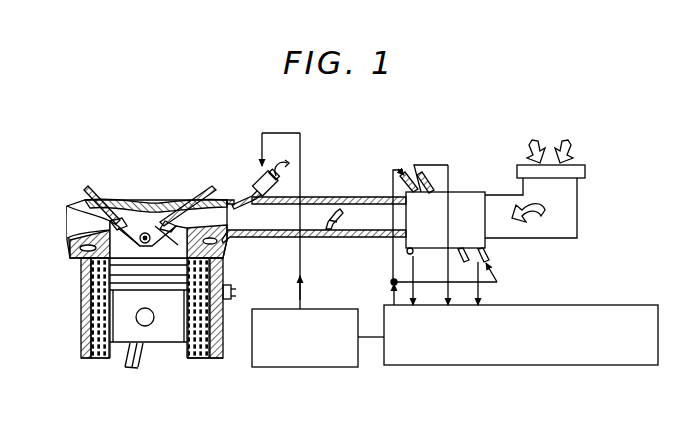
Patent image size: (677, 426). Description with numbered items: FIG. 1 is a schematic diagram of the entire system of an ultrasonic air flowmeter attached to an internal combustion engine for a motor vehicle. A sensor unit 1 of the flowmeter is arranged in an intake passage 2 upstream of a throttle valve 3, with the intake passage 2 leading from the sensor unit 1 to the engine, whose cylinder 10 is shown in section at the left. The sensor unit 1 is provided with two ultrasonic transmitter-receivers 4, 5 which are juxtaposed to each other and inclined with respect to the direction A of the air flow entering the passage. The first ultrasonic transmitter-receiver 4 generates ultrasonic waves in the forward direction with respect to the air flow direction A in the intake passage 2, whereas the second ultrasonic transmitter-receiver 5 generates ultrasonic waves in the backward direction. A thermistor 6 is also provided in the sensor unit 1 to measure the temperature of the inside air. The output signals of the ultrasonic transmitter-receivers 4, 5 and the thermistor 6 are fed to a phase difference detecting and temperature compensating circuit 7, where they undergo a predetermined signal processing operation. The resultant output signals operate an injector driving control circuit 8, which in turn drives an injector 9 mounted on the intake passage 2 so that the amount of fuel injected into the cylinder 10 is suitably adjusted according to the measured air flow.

The sensor unit 1 is at (467, 183).
The intake passage 2 is at (363, 197).
The throttle valve 3 is at (328, 212).
The ultrasonic transmitter-receiver 4 is at (437, 182).
The ultrasonic transmitter-receiver 5 is at (398, 169).
The thermistor 6 is at (408, 252).
The phase difference detecting and temperature compensating circuit 7 is at (528, 365).
The injector driving control circuit 8 is at (311, 368).
The injector 9 is at (260, 180).
The cylinder 10 is at (146, 230).
The direction of air flow A is at (543, 220).